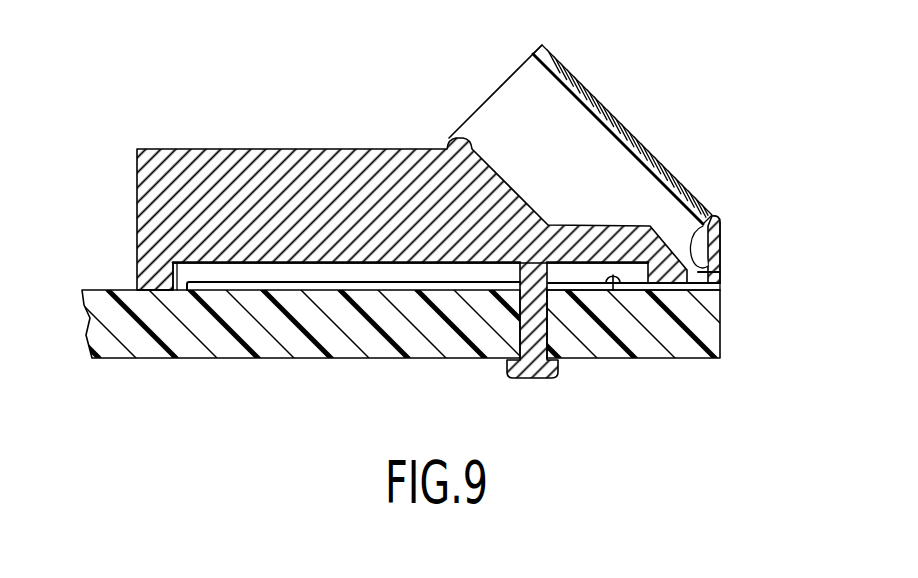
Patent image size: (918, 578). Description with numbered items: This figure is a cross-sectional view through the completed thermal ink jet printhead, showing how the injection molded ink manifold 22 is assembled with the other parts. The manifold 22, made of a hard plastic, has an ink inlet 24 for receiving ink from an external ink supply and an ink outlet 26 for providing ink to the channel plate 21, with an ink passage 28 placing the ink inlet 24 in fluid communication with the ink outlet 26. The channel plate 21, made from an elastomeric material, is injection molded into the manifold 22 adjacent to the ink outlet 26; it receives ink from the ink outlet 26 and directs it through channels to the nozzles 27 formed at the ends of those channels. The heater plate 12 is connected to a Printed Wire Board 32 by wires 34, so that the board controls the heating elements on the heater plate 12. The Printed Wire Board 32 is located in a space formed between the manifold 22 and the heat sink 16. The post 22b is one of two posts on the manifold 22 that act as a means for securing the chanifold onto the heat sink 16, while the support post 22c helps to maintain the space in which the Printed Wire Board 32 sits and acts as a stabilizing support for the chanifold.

The heater plate 12 is at (565, 298).
The heat sink 16 is at (124, 342).
The channel plate 21 is at (688, 292).
The ink manifold 22 is at (213, 149).
The post 22b is at (530, 380).
The support post 22c is at (140, 272).
The ink inlet 24 is at (501, 59).
The ink outlet 26 is at (700, 232).
The nozzles 27 is at (733, 271).
The ink passage 28 is at (568, 128).
The Printed Wire Board 32 is at (262, 283).
The wires 34 is at (613, 288).